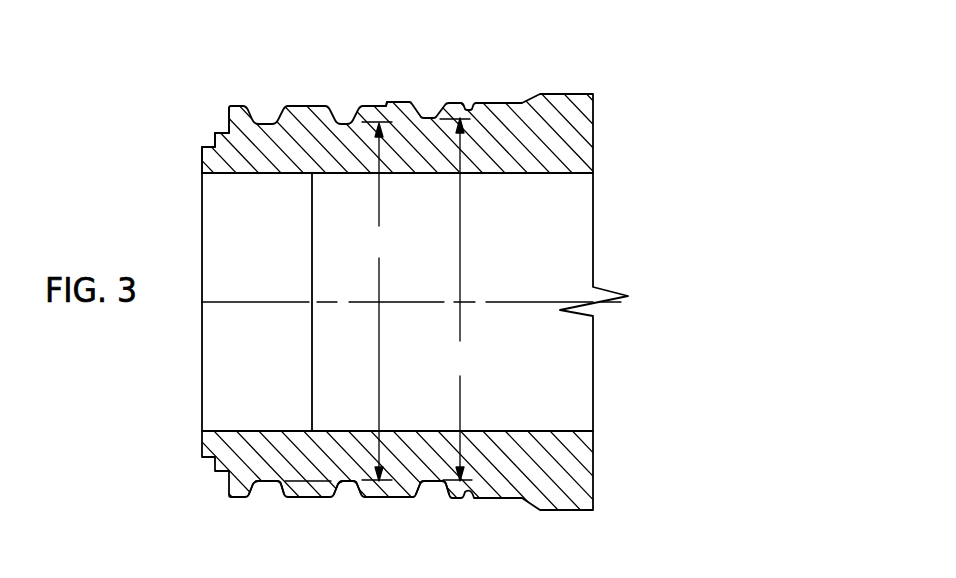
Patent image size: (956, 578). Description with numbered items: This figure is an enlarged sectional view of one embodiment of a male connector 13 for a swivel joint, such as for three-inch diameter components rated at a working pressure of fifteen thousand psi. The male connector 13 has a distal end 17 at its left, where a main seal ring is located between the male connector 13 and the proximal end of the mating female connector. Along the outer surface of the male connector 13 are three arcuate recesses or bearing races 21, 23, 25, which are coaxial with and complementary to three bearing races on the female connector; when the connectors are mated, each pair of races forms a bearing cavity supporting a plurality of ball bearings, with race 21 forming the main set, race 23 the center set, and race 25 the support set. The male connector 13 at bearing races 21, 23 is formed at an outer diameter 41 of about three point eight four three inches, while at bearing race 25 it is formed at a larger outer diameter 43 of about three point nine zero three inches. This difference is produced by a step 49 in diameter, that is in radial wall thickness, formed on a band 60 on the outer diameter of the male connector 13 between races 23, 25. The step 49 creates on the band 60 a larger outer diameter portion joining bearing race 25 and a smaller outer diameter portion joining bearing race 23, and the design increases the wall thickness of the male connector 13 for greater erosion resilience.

The male connector 13 is at (602, 48).
The distal end 17 is at (202, 158).
The step 49 is at (397, 102).
The outer diameter 41 is at (377, 301).
The outer diameter 43 is at (456, 299).
The bearing race 21 is at (277, 487).
The bearing race 23 is at (358, 487).
The band 60 is at (400, 499).
The bearing race 25 is at (438, 486).